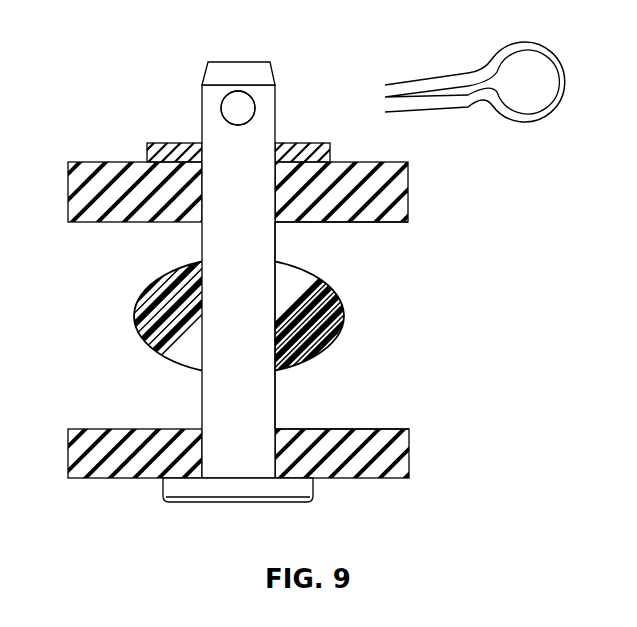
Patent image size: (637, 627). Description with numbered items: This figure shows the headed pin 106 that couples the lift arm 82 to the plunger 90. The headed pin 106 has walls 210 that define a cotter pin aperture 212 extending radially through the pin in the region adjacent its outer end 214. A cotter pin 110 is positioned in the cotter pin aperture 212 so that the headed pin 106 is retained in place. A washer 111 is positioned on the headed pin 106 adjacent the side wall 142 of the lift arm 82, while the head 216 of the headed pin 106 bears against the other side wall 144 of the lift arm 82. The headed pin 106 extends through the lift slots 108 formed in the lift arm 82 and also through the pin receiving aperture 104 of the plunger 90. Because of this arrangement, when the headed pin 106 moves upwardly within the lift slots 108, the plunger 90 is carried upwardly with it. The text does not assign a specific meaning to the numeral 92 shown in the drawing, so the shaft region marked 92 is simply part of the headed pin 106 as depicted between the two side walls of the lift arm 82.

The lift arm 82 is at (410, 203).
The plunger 90 is at (135, 307).
The pin shaft 92 is at (202, 392).
The pin receiving aperture 104 is at (277, 370).
The headed pin 106 is at (450, 314).
The lift slots 108 is at (276, 222).
The cotter pin 110 is at (533, 44).
The washer 111 is at (148, 150).
The side wall 142 is at (400, 224).
The other side wall 144 is at (370, 431).
The walls 210 is at (254, 108).
The cotter pin aperture 212 is at (235, 102).
The outer end 214 is at (232, 62).
The head 216 is at (238, 503).